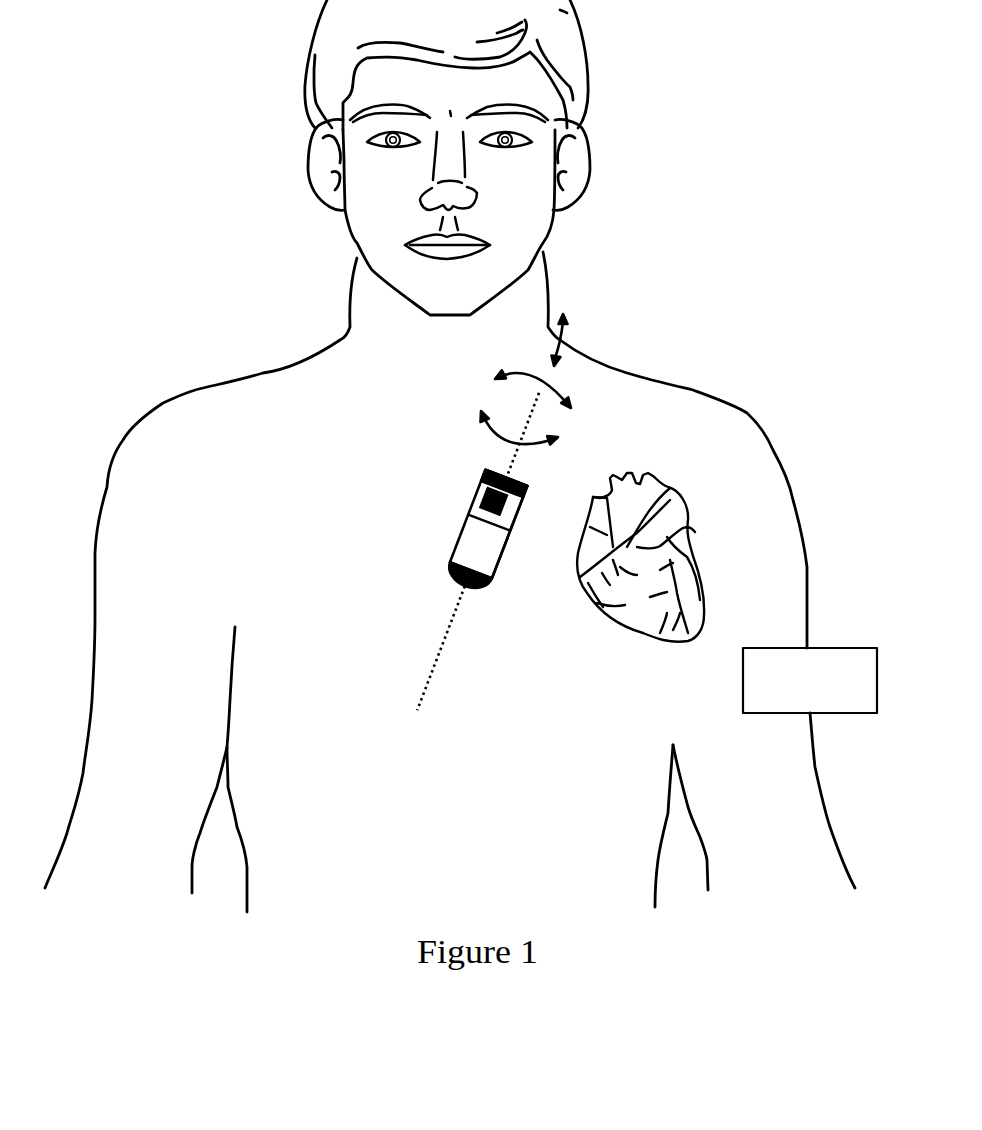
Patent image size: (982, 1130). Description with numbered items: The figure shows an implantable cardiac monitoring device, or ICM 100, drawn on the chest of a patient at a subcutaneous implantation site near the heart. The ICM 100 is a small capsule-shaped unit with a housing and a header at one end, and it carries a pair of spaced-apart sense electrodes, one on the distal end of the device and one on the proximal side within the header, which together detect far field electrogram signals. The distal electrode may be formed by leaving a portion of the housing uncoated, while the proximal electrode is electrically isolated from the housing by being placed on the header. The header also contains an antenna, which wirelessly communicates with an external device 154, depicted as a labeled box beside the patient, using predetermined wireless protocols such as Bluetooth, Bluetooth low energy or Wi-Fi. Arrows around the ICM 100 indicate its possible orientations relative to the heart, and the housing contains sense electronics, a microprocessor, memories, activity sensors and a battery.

The implantable cardiac monitoring device (ICM) 100 is at (487, 516).
The external device 154 is at (853, 713).